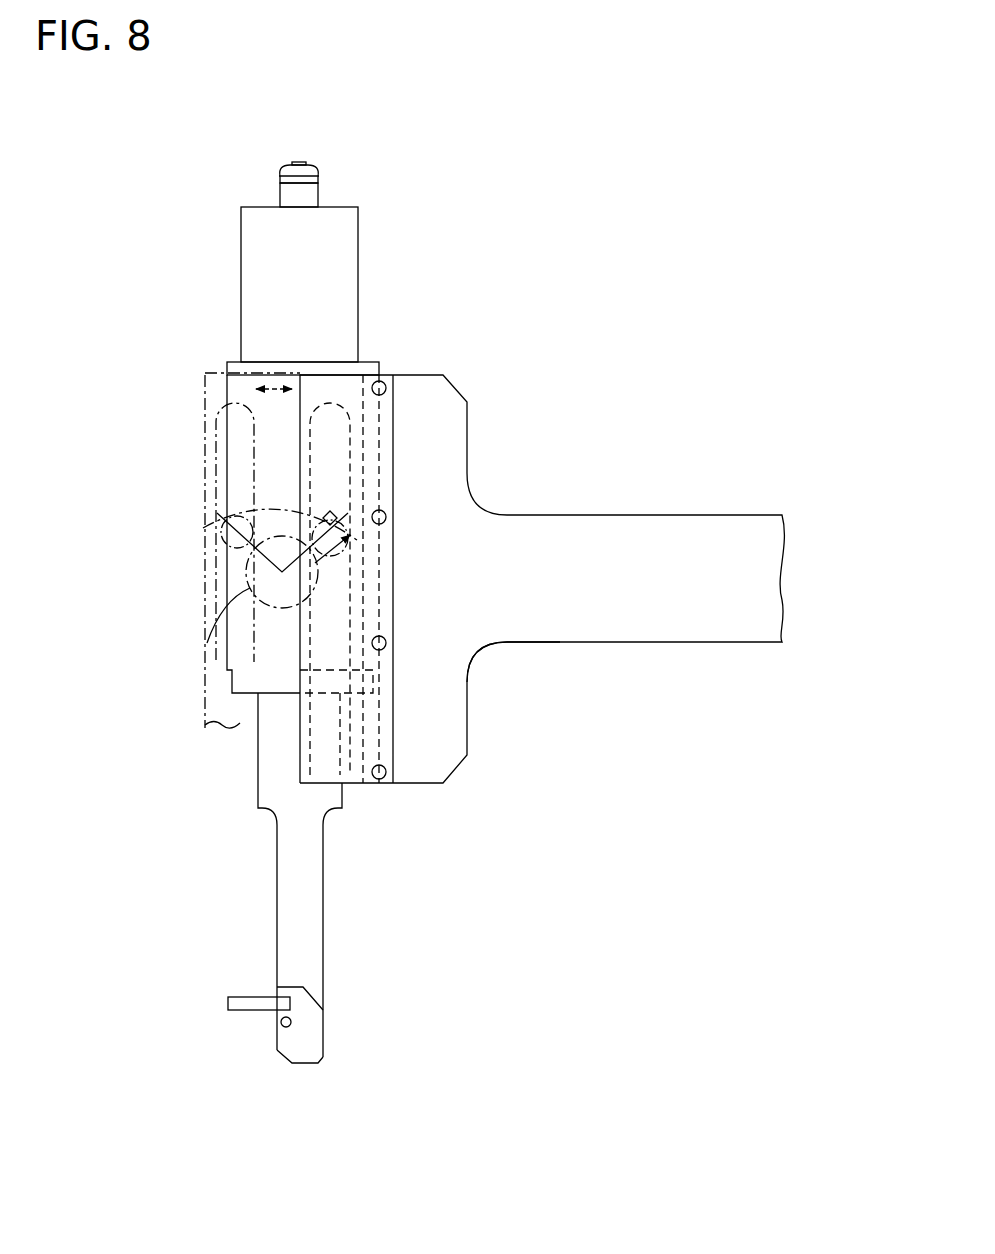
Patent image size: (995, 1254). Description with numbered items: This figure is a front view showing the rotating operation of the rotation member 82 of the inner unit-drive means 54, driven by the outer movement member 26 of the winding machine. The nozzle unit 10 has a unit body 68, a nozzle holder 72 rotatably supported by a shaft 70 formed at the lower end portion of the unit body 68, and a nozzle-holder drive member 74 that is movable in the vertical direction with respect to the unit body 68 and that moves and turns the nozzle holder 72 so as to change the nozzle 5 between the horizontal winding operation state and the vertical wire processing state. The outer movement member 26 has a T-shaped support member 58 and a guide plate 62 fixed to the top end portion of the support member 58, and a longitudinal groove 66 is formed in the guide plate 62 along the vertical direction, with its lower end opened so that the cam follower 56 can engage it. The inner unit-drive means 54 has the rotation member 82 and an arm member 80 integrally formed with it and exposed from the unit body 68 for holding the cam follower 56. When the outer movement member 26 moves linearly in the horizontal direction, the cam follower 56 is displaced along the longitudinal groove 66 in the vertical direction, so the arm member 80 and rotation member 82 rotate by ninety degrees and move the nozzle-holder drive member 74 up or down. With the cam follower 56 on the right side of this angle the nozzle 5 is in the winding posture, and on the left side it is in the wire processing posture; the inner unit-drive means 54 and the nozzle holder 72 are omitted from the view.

The nozzle 5 is at (242, 1003).
The nozzle unit 10 is at (237, 297).
The outer movement member 26 is at (612, 512).
The inner unit-drive means 54 is at (237, 581).
The cam follower 56 is at (233, 523).
The support member 58 is at (530, 645).
The guide plate 62 is at (197, 385).
The longitudinal groove 66 is at (215, 457).
The unit body 68 is at (359, 258).
The shaft 70 is at (279, 1022).
The nozzle holder 72 is at (283, 1050).
The nozzle-holder drive member 74 is at (320, 172).
The arm member 80 is at (360, 550).
The rotation member 82 is at (207, 643).